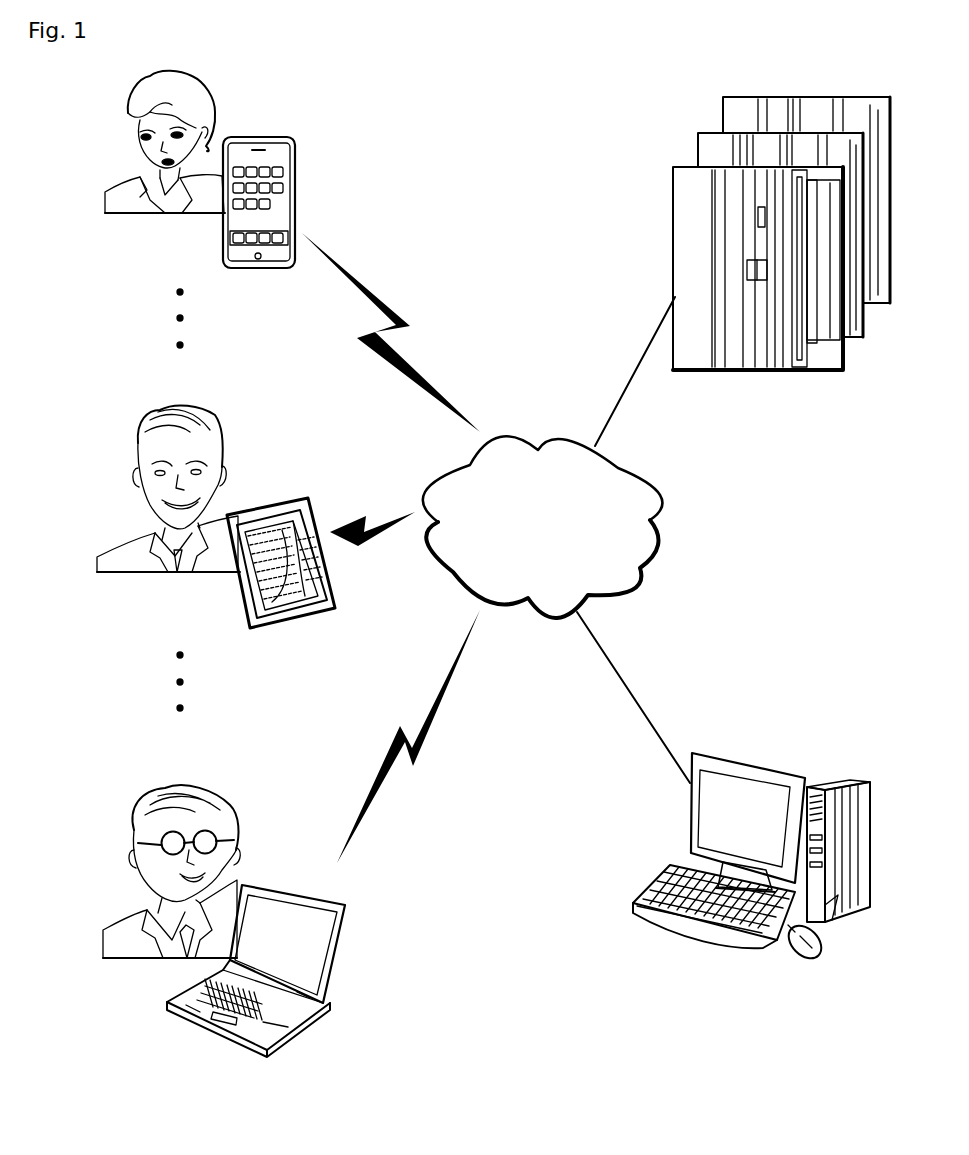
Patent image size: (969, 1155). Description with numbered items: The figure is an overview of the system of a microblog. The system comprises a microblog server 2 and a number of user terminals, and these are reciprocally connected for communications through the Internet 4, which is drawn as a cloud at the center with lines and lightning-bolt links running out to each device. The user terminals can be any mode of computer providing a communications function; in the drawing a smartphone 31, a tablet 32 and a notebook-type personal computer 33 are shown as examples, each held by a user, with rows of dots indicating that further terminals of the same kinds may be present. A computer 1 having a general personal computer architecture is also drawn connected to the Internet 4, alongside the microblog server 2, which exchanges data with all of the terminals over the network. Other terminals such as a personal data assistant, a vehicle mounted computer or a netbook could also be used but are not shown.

The computer 1 is at (840, 783).
The microblog server 2 is at (673, 207).
The Internet 4 is at (543, 535).
The smartphone 31 is at (301, 172).
The tablet 32 is at (283, 501).
The personal computer (notebook type) 33 is at (336, 936).